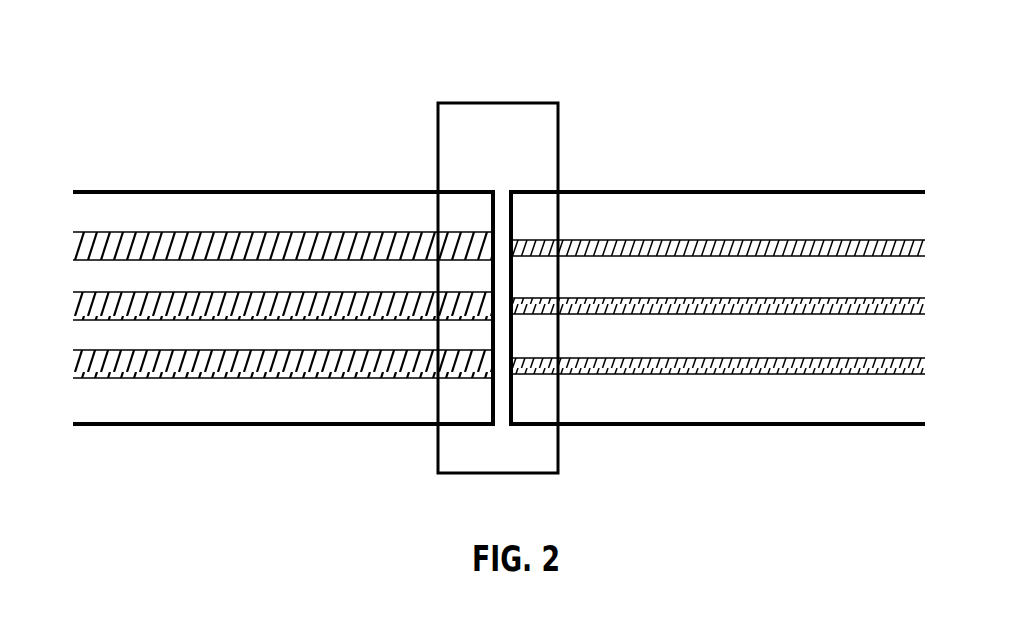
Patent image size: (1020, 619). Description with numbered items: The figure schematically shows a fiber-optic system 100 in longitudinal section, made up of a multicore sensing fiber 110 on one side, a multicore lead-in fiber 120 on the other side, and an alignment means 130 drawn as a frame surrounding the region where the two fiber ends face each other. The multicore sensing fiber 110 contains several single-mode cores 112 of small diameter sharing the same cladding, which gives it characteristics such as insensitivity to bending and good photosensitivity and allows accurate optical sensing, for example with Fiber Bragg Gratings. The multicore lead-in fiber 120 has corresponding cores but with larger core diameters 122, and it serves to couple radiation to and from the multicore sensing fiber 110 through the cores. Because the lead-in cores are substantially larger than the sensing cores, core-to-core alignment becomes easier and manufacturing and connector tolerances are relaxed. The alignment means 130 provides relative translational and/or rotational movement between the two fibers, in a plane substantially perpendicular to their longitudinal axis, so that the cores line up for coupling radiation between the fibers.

The fiber-optic system 100 is at (208, 64).
The multicore sensing fiber 110 is at (668, 191).
The cores 112 is at (803, 362).
The multicore lead-in fiber 120 is at (168, 191).
The larger core diameters 122 is at (313, 362).
The alignment means 130 is at (435, 137).